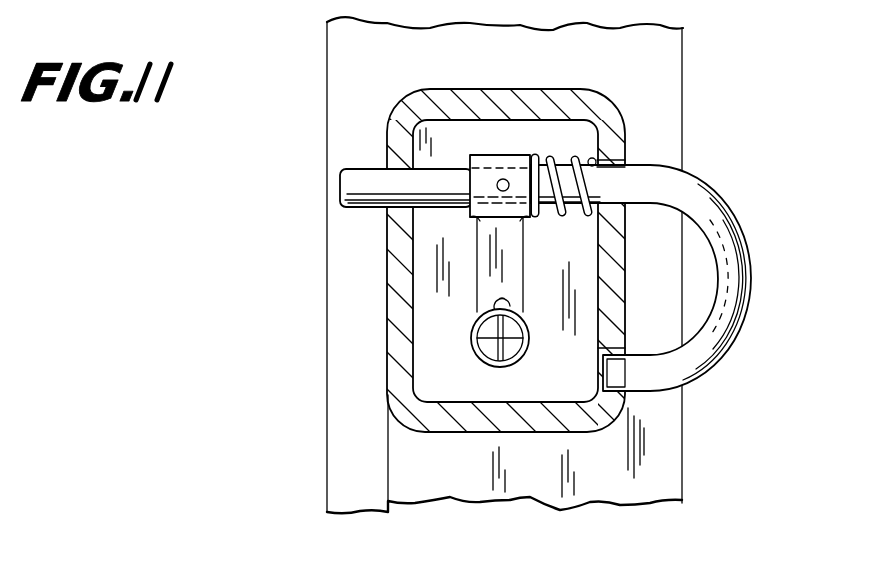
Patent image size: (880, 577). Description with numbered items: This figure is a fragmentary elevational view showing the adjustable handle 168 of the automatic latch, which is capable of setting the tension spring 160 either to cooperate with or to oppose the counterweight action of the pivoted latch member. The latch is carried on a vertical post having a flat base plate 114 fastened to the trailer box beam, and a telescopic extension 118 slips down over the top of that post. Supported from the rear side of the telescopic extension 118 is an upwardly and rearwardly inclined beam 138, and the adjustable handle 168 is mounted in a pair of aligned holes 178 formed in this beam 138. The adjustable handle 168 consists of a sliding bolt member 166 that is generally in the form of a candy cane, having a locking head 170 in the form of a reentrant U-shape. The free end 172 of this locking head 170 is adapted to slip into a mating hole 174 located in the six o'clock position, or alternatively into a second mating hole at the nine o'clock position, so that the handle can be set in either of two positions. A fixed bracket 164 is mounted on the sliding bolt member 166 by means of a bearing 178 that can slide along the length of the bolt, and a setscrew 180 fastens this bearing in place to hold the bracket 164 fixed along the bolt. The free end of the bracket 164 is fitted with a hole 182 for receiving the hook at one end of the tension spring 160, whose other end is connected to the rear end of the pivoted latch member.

The flat base plate 114 is at (463, 483).
The telescopic extension 118 is at (345, 117).
The inclined beam 138 is at (385, 366).
The tension spring 160 is at (483, 360).
The fixed bracket 164 is at (478, 300).
The sliding bolt member 166 is at (437, 180).
The adjustable handle 168 is at (730, 210).
The locking head 170 is at (733, 326).
The free end 172 is at (620, 368).
The mating hole 174 is at (605, 352).
The aligned holes 178 is at (396, 168).
The setscrew 180 is at (506, 182).
The hole 182 is at (507, 301).